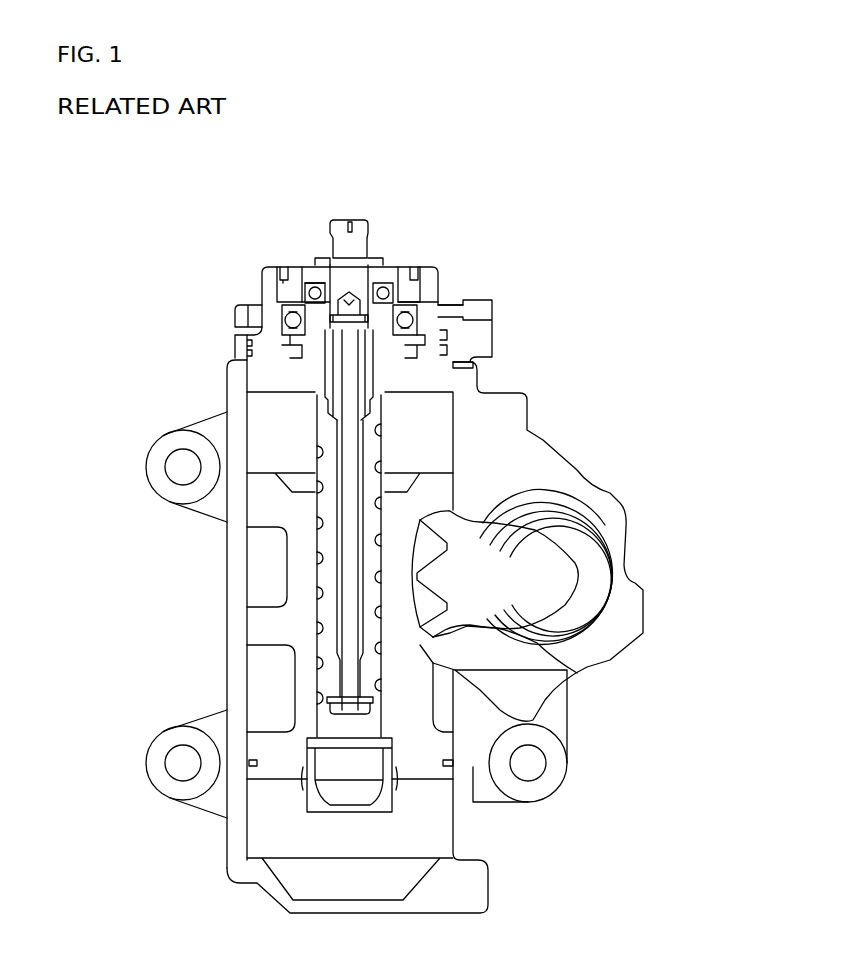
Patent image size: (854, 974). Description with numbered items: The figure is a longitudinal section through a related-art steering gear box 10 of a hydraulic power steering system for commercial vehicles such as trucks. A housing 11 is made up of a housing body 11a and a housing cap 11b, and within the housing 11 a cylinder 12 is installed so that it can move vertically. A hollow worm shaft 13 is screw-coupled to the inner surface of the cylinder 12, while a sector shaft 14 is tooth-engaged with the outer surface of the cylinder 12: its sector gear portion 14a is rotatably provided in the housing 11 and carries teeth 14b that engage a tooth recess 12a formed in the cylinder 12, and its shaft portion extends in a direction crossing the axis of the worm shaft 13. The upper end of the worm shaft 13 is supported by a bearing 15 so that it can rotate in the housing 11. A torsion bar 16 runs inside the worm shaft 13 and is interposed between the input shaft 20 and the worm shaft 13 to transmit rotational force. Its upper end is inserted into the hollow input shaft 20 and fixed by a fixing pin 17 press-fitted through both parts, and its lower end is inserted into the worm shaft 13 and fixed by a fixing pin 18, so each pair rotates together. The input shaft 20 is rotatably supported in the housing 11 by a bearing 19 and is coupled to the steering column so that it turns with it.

The steering apparatus 10 is at (553, 400).
The housing 11 is at (103, 338).
The housing body 11a is at (237, 400).
The housing cap 11b is at (238, 350).
The cylinder 12 is at (305, 625).
The tooth recess 12a is at (577, 673).
The worm shaft 13 is at (323, 540).
The sector shaft 14 is at (510, 517).
The sector gear portion 14a is at (528, 553).
The teeth 14b is at (545, 721).
The bearing 15 is at (407, 320).
The torsion bar 16 is at (398, 350).
The fixing pin 17 is at (348, 323).
The fixing pin 18 is at (365, 703).
The bearing 19 is at (317, 290).
The input shaft 20 is at (345, 237).